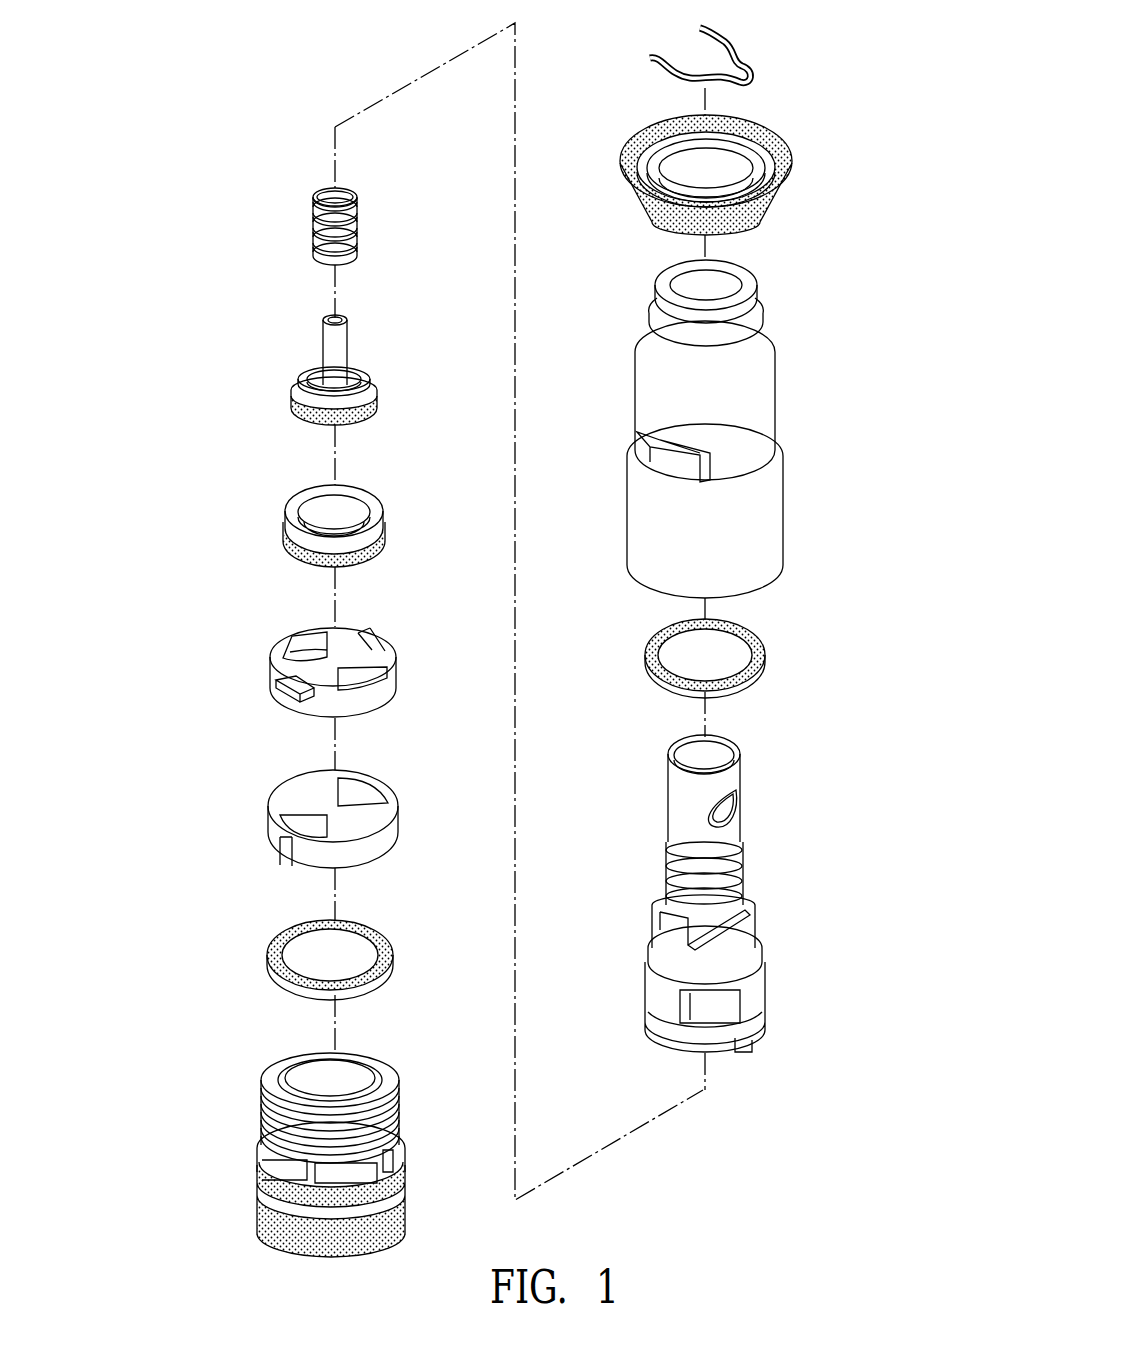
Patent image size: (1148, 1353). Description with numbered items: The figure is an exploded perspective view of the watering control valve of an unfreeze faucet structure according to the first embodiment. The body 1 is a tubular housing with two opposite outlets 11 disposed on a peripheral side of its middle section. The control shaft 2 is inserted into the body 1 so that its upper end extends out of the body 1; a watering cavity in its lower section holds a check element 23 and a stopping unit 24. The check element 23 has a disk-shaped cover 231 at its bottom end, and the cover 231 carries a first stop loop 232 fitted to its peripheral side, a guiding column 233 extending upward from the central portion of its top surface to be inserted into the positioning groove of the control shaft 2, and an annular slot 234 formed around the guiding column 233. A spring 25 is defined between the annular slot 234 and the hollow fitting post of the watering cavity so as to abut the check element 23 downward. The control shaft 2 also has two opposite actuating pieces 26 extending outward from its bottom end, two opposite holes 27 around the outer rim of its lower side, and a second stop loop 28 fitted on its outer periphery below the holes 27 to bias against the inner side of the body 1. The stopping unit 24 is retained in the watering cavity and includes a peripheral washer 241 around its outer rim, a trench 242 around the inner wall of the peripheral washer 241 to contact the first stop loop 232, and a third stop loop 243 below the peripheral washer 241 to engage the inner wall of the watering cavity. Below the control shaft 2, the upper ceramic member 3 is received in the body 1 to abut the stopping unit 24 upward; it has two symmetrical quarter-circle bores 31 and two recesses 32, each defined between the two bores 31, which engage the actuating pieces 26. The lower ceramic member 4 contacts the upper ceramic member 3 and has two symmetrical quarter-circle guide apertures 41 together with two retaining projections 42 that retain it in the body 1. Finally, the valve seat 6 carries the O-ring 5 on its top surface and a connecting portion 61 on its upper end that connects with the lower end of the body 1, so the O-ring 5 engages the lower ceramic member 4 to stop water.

The body 1 is at (711, 429).
The outlets 11 is at (678, 460).
The control shaft 2 is at (724, 906).
The check element 23 is at (323, 354).
The disk-shaped cover 231 is at (296, 380).
The first stop loop 232 is at (300, 407).
The guiding column 233 is at (325, 318).
The annular slot 234 is at (349, 372).
The stopping unit 24 is at (345, 510).
The peripheral washer 241 is at (386, 528).
The trench 242 is at (362, 506).
The third stop loop 243 is at (290, 548).
The spring 25 is at (352, 202).
The actuating pieces 26 is at (752, 1043).
The holes 27 is at (735, 1003).
The second stop loop 28 is at (676, 1040).
The upper ceramic member 3 is at (338, 653).
The bores 31 is at (312, 648).
The recesses 32 is at (292, 689).
The lower ceramic member 4 is at (317, 808).
The guide apertures 41 is at (362, 797).
The retaining projections 42 is at (282, 854).
The O-ring 5 is at (396, 950).
The valve seat 6 is at (329, 1155).
The connecting portion 61 is at (402, 1115).